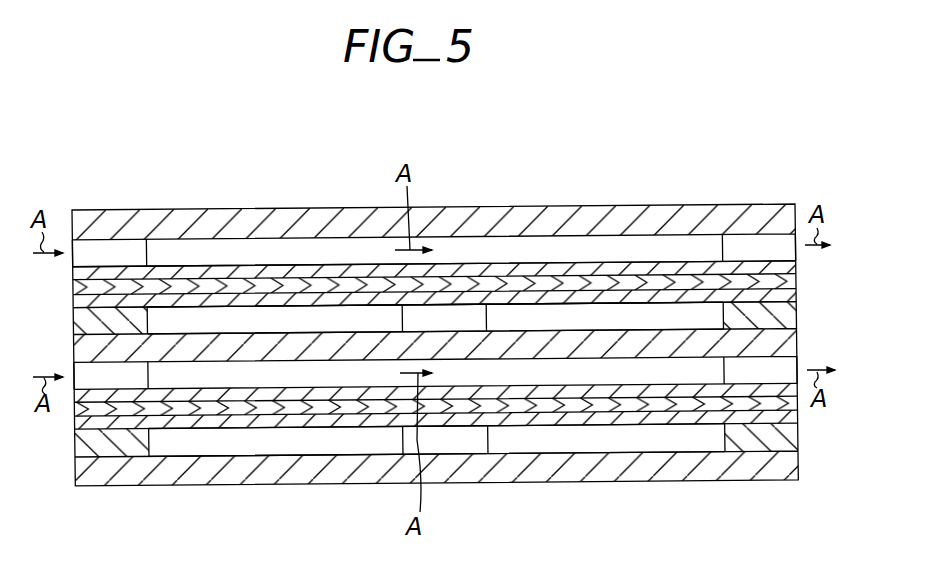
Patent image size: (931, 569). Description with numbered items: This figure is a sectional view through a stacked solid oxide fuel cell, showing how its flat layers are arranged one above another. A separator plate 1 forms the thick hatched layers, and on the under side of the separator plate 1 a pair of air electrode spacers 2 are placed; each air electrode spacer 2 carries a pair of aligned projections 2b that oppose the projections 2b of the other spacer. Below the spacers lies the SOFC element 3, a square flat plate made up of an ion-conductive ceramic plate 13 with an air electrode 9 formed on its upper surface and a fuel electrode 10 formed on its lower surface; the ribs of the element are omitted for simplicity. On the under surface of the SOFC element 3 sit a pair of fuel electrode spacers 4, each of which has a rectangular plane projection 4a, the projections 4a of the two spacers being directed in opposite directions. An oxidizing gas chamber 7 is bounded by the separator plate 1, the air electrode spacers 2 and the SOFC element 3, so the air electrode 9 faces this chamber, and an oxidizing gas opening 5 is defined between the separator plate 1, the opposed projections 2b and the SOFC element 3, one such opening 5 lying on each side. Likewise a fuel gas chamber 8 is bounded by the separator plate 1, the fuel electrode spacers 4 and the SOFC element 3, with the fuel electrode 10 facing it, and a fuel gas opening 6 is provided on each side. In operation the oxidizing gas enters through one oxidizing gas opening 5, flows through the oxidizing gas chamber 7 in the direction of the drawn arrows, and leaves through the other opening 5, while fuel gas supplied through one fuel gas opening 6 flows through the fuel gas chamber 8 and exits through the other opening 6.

The separator plate 1 is at (445, 216).
The air electrode spacer 2 is at (194, 250).
The projection 2b is at (128, 250).
The SOFC element 3 is at (62, 267).
The fuel electrode spacer 4 is at (240, 317).
The projection 4a is at (73, 328).
The oxidizing gas opening 5 is at (91, 241).
The fuel gas opening 6 is at (485, 323).
The oxidizing gas chamber 7 is at (318, 241).
The fuel gas chamber 8 is at (358, 310).
The air electrode 9 is at (797, 267).
The fuel electrode 10 is at (797, 295).
The ion-conductive ceramic plate 13 is at (797, 278).